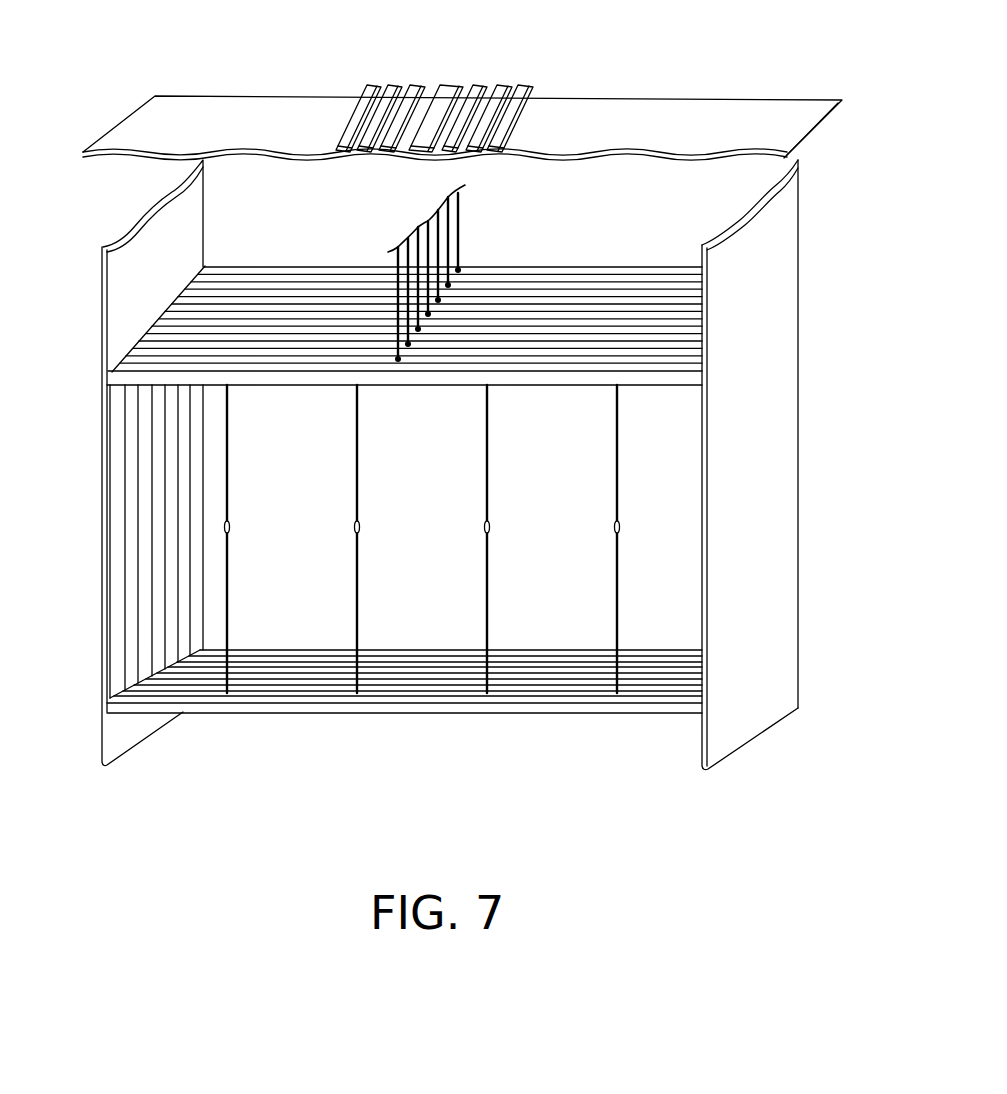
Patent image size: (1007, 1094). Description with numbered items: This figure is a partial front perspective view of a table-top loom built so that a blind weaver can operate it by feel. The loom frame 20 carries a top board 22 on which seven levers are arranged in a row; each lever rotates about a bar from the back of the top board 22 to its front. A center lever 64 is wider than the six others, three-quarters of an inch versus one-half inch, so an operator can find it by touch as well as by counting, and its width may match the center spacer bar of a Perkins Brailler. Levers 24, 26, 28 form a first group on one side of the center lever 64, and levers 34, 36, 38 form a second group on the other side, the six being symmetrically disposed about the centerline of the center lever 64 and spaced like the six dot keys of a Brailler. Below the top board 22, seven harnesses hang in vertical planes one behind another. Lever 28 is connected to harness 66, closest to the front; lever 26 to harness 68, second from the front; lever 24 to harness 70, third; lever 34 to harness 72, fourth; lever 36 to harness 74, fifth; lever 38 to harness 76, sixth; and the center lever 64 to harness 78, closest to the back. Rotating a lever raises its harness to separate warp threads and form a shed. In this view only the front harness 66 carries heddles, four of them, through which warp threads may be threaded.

The loom frame 20 is at (100, 492).
The top board 22 is at (740, 142).
The lever 24 is at (372, 84).
The lever 26 is at (396, 84).
The lever 28 is at (418, 84).
The lever 34 is at (482, 84).
The lever 36 is at (504, 84).
The lever 38 is at (527, 84).
The center lever 64 is at (452, 84).
The harness 66 is at (120, 354).
The harness 68 is at (134, 338).
The harness 70 is at (150, 318).
The harness 72 is at (160, 308).
The harness 74 is at (177, 292).
The harness 76 is at (195, 280).
The harness 78 is at (208, 268).